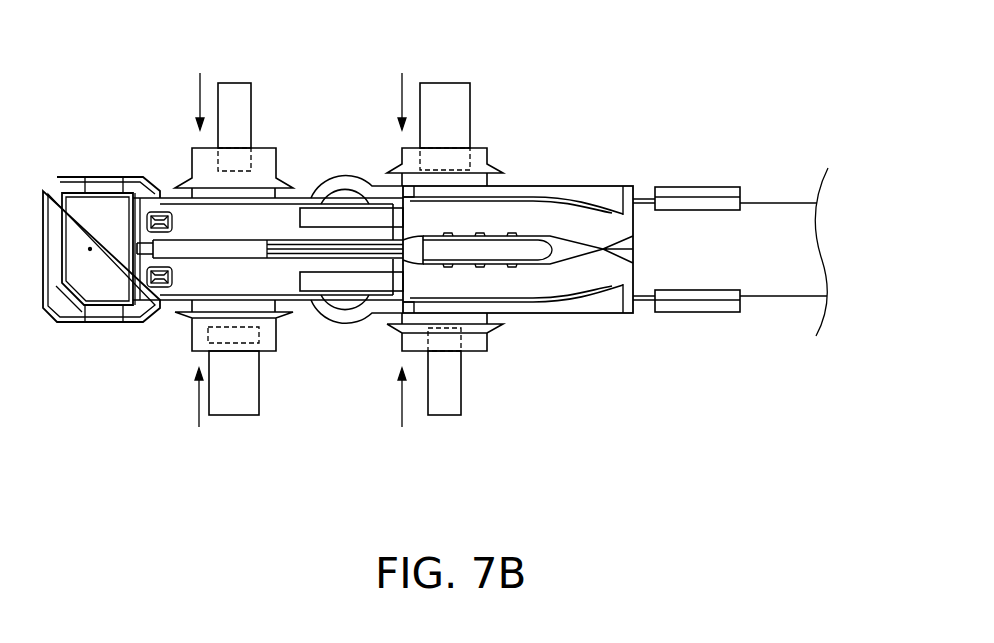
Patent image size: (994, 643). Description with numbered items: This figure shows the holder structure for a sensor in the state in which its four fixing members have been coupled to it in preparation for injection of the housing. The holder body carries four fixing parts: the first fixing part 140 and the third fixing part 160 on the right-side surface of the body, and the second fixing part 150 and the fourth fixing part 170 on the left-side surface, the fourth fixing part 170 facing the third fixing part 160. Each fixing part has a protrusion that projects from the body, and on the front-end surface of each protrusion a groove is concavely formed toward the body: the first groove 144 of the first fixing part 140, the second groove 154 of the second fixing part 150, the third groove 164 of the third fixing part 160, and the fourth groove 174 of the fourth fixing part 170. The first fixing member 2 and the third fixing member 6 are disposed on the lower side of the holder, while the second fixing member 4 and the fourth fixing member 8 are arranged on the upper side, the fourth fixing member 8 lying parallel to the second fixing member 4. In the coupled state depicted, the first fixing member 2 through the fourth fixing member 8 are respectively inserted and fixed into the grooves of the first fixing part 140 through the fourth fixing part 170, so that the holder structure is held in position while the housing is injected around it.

The first fixing member 2 is at (437, 415).
The second fixing member 4 is at (437, 82).
The third fixing member 6 is at (233, 415).
The fourth fixing member 8 is at (233, 82).
The first fixing part 140 is at (503, 350).
The first groove 144 is at (462, 339).
The second fixing part 150 is at (503, 152).
The second groove 154 is at (470, 158).
The third fixing part 160 is at (183, 352).
The third groove 164 is at (258, 339).
The fourth fixing part 170 is at (183, 147).
The fourth groove 174 is at (251, 158).